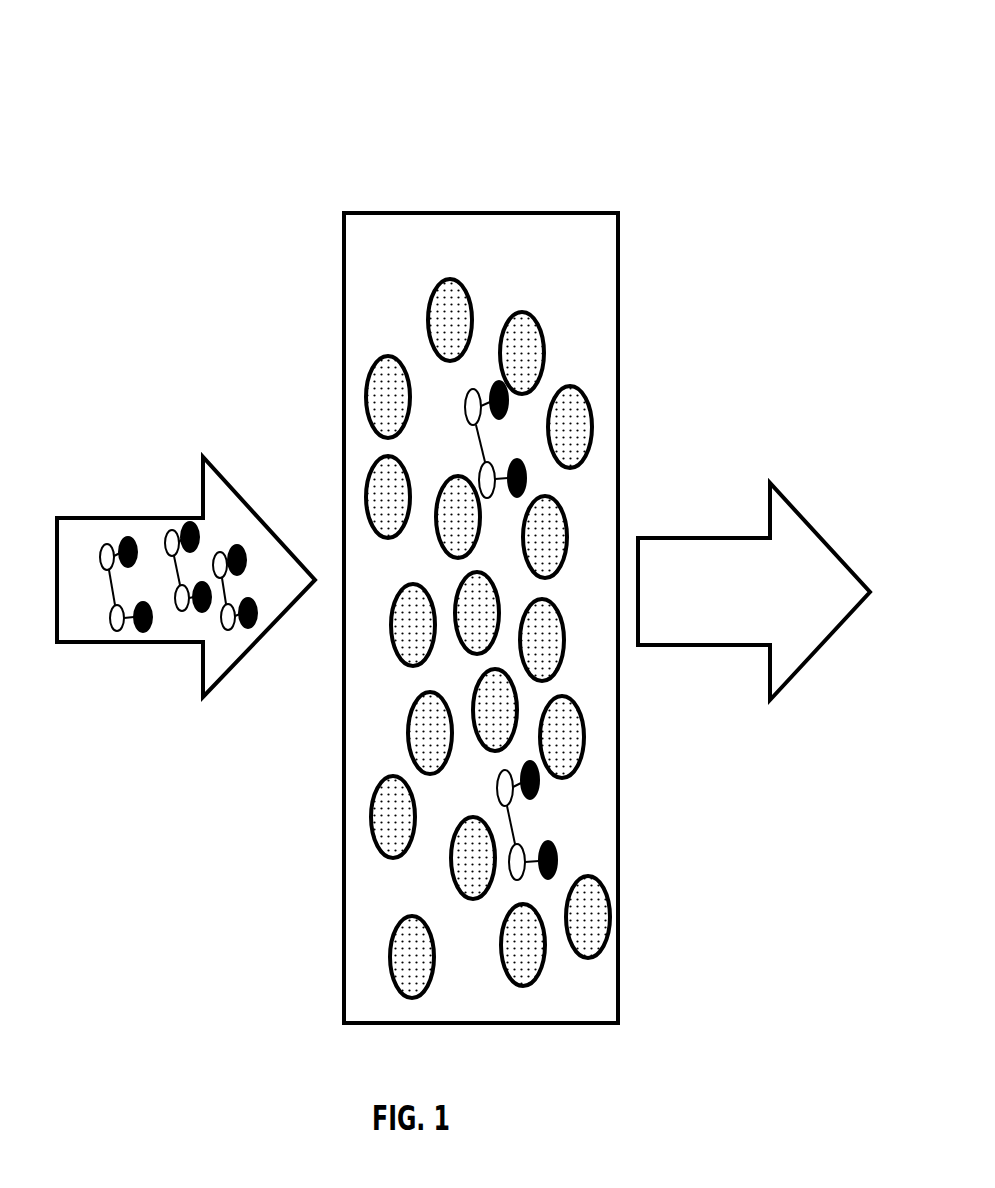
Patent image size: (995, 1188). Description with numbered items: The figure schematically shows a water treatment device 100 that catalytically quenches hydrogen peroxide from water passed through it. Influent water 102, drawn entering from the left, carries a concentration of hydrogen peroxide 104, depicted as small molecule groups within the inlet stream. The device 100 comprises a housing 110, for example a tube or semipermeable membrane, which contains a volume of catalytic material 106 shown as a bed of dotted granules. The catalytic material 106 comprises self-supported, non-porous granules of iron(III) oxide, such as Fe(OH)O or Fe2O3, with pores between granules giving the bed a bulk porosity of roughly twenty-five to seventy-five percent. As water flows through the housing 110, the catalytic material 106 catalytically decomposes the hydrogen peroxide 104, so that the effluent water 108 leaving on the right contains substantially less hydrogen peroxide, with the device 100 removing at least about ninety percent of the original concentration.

The water treatment device 100 is at (231, 110).
The influent water 102 is at (115, 508).
The H2O2 concentration 104 is at (218, 622).
The catalytic material 106 is at (460, 860).
The effluent water 108 is at (693, 535).
The housing 110 is at (548, 213).